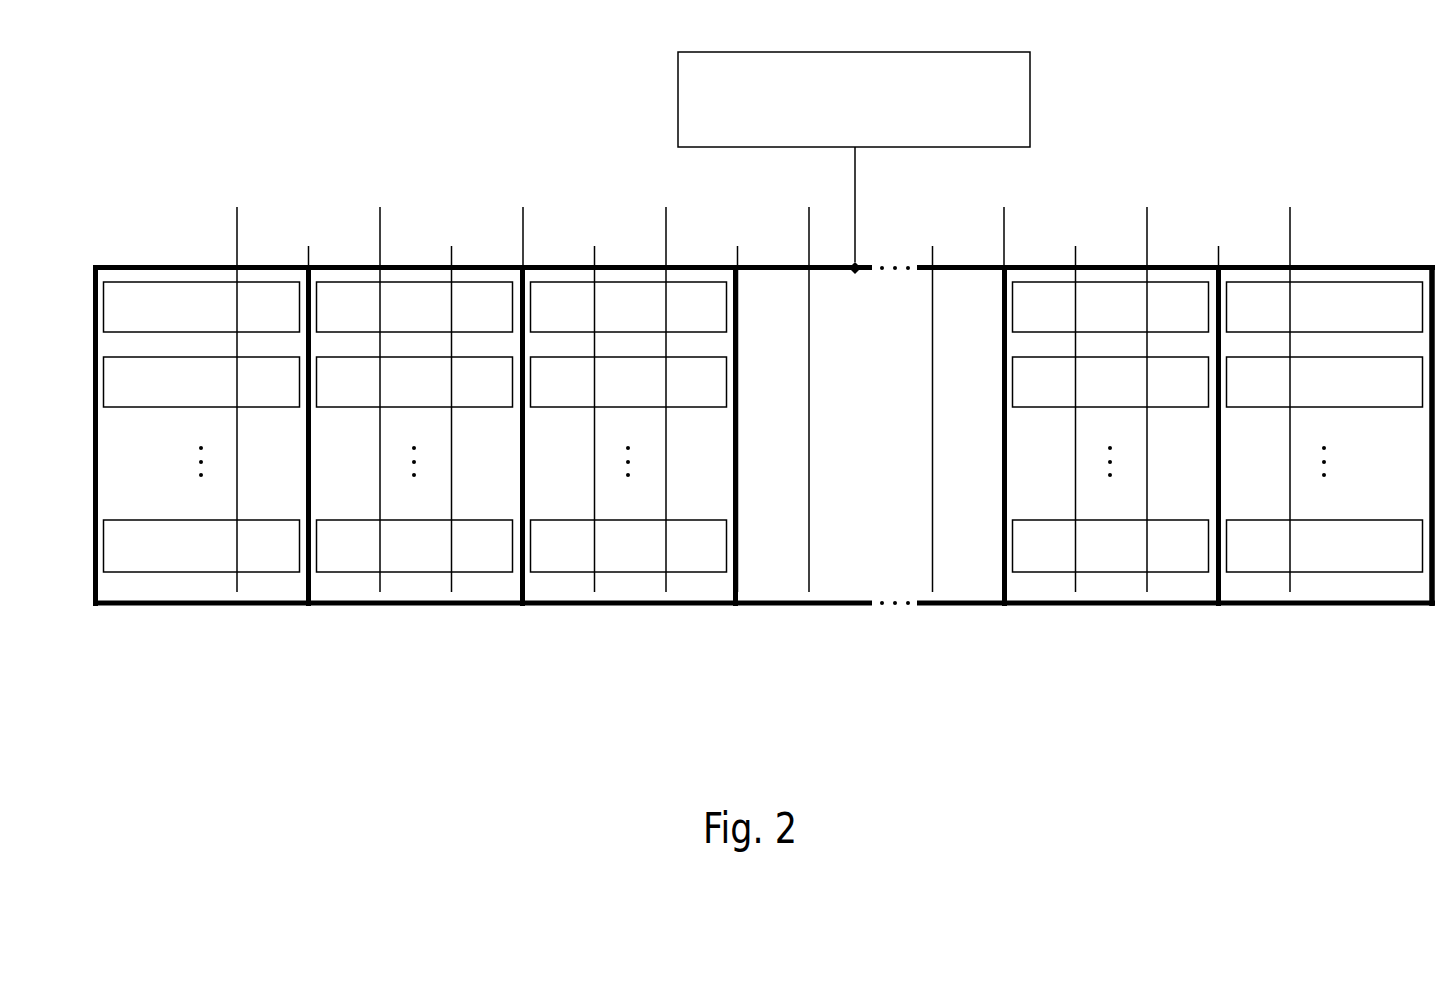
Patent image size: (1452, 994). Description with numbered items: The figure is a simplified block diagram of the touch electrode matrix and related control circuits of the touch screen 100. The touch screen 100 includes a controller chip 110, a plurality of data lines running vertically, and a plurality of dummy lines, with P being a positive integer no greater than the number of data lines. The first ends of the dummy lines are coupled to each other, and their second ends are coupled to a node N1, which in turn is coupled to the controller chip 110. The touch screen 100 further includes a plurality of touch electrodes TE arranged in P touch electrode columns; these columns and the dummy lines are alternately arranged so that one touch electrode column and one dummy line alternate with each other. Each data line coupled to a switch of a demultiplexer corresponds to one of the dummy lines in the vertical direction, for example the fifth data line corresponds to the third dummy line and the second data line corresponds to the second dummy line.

The touch screen 100 is at (124, 51).
The controller chip 110 is at (1031, 100).
The node N1 is at (855, 272).
The touch electrodes TE is at (763, 427).